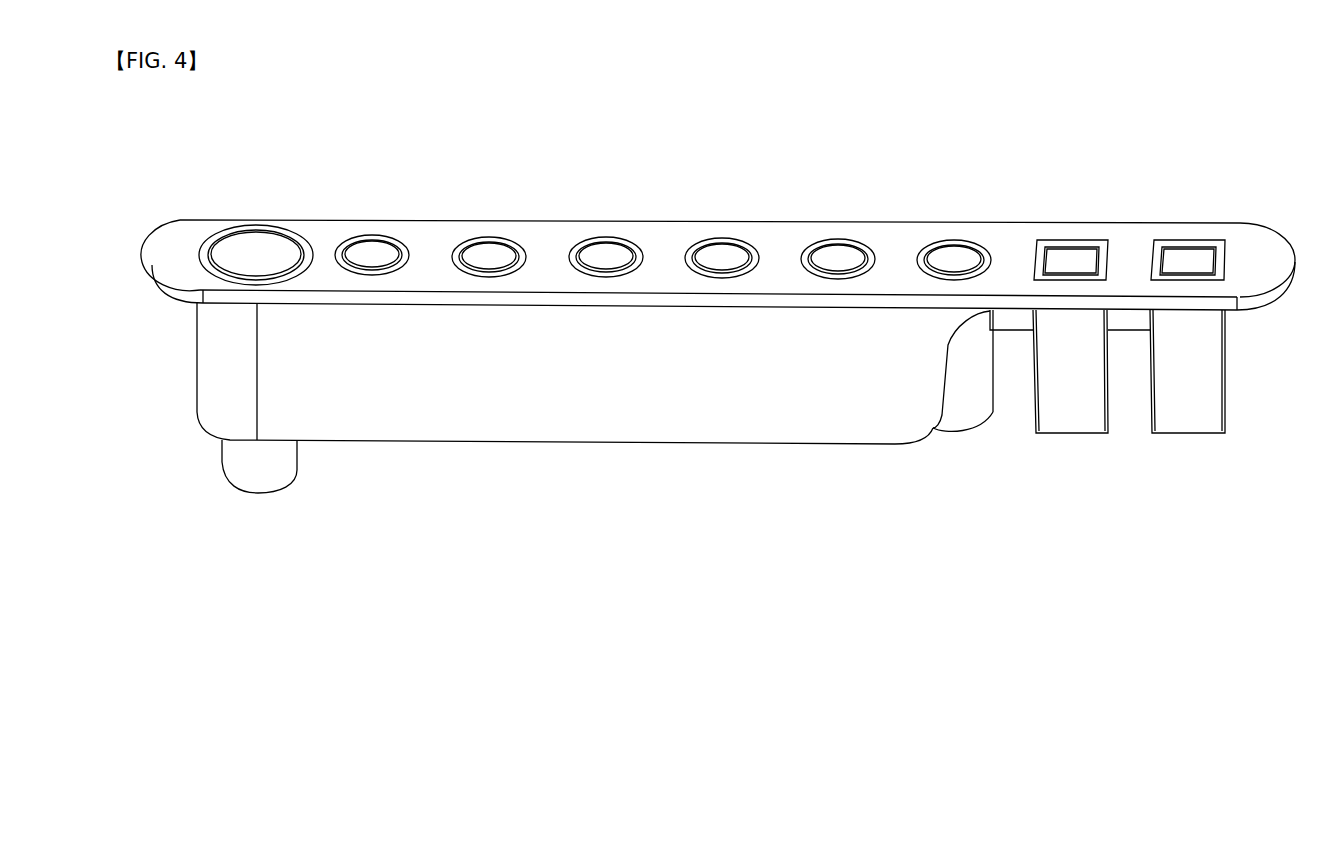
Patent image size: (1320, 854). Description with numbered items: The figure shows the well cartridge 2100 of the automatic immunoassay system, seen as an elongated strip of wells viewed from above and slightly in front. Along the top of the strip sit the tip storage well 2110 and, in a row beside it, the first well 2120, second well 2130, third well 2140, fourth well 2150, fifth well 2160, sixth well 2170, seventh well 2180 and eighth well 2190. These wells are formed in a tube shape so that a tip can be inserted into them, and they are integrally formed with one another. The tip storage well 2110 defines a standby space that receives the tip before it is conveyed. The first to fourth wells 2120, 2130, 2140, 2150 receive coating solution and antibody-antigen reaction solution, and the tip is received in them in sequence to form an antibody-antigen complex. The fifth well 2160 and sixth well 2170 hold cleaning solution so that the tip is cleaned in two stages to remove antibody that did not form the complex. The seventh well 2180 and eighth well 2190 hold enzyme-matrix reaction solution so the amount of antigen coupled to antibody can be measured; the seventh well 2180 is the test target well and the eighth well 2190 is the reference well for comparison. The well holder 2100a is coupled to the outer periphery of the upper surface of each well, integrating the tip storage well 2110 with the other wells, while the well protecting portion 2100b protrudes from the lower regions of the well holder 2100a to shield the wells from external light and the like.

The well cartridge 2100 is at (200, 212).
The well holder 2100a is at (183, 265).
The well protecting portion 2100b is at (455, 377).
The tip storage well 2110 is at (258, 250).
The first well 2120 is at (373, 255).
The second well 2130 is at (490, 252).
The third well 2140 is at (607, 255).
The fourth well 2150 is at (725, 255).
The fifth well 2160 is at (840, 258).
The sixth well 2170 is at (955, 258).
The seventh well 2180 is at (1073, 258).
The eighth well 2190 is at (1188, 262).